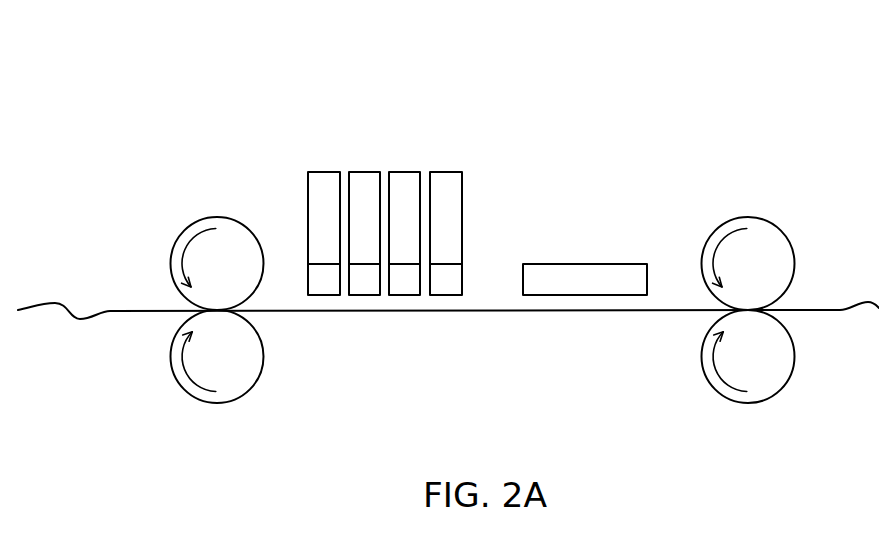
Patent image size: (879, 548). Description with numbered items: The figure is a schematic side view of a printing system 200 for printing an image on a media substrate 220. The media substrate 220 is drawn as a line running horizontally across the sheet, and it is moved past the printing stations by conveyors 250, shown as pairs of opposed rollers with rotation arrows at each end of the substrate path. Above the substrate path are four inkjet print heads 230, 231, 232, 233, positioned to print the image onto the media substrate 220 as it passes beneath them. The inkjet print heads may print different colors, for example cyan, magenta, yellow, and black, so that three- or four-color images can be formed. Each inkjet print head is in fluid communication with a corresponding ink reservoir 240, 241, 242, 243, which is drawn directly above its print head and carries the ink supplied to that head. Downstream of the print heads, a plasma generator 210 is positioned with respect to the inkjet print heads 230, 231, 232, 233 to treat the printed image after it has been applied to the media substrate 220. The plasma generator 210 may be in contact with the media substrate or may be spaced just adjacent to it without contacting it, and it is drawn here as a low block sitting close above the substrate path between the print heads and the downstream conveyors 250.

The printing system 200 is at (162, 75).
The plasma generator 210 is at (577, 275).
The media substrate 220 is at (118, 307).
The inkjet print head 230 is at (330, 287).
The inkjet print head 231 is at (370, 285).
The inkjet print head 232 is at (408, 275).
The inkjet print head 233 is at (455, 285).
The ink reservoir 240 is at (322, 190).
The ink reservoir 241 is at (365, 185).
The ink reservoir 242 is at (405, 185).
The ink reservoir 243 is at (450, 185).
The conveyors 250 is at (242, 372).